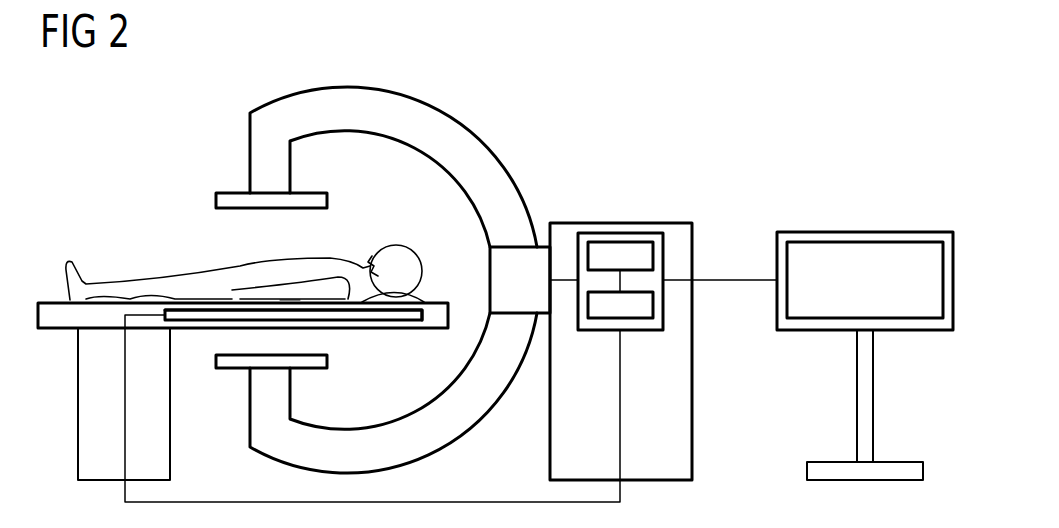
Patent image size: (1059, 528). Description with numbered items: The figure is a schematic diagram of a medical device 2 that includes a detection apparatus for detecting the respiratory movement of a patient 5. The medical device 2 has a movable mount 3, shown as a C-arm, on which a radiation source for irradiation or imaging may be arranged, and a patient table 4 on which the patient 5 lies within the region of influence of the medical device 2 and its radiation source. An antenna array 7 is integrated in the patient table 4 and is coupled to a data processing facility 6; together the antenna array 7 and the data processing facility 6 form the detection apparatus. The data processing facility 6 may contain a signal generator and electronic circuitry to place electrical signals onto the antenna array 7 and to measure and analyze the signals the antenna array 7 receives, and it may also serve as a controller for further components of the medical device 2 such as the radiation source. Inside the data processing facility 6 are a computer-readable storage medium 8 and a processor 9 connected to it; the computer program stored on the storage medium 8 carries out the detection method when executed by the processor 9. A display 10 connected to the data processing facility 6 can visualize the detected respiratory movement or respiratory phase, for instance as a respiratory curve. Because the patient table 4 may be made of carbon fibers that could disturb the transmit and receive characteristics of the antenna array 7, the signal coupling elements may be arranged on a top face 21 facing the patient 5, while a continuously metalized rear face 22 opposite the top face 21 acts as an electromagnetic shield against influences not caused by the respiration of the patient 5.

The medical device 2 is at (570, 223).
The movable mount 3 is at (490, 145).
The patient table 4 is at (98, 318).
The patient 5 is at (148, 288).
The data processing facility 6 is at (620, 233).
The antenna array 7 is at (421, 321).
The computer-readable storage medium 8 is at (653, 304).
The processor 9 is at (653, 252).
The display 10 is at (868, 232).
The top face 21 is at (288, 303).
The rear face 22 is at (335, 320).